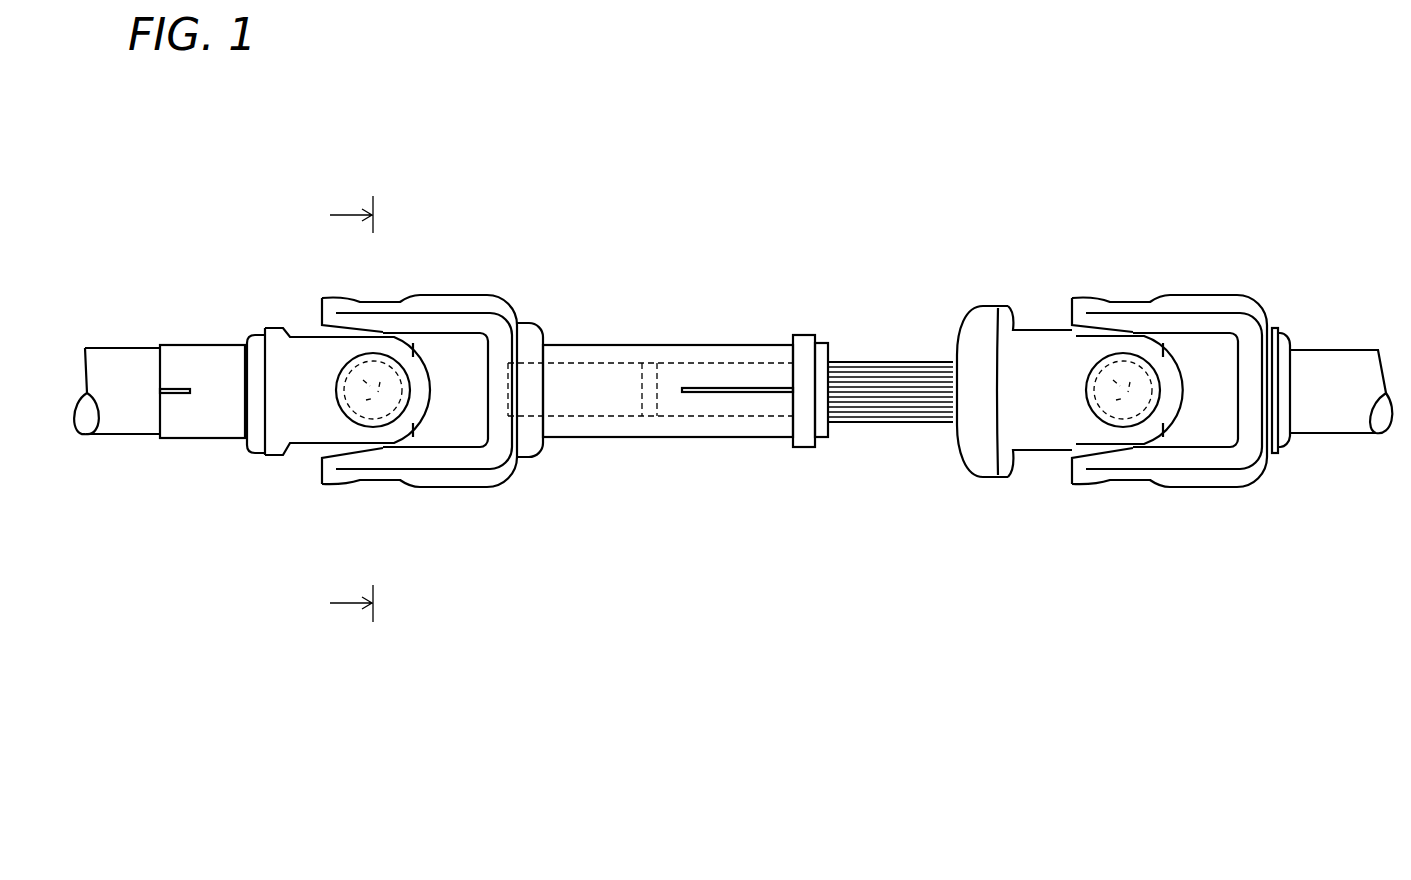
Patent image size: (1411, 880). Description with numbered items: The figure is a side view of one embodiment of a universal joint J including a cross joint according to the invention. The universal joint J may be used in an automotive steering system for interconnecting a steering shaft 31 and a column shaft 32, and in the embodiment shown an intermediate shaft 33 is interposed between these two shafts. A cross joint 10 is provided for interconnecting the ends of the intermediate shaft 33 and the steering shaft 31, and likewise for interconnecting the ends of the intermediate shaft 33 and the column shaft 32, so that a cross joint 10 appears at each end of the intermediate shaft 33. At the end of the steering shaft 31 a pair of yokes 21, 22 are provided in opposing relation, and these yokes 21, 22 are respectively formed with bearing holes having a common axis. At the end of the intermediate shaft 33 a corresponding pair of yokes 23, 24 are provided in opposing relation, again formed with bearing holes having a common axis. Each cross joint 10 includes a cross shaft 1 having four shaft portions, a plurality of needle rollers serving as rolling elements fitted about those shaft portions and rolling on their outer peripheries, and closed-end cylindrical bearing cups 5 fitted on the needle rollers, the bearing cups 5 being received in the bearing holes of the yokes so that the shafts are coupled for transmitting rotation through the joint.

The universal joint J is at (898, 263).
The cross shaft 1 is at (736, 397).
The bearing cup 5 is at (733, 465).
The cross joint 10 is at (361, 436).
The yoke 21 is at (322, 410).
The yoke 22 is at (307, 360).
The yoke 23 is at (794, 397).
The yoke 24 is at (416, 478).
The steering shaft 31 is at (125, 370).
The column shaft 32 is at (1337, 420).
The intermediate shaft 33 is at (600, 343).